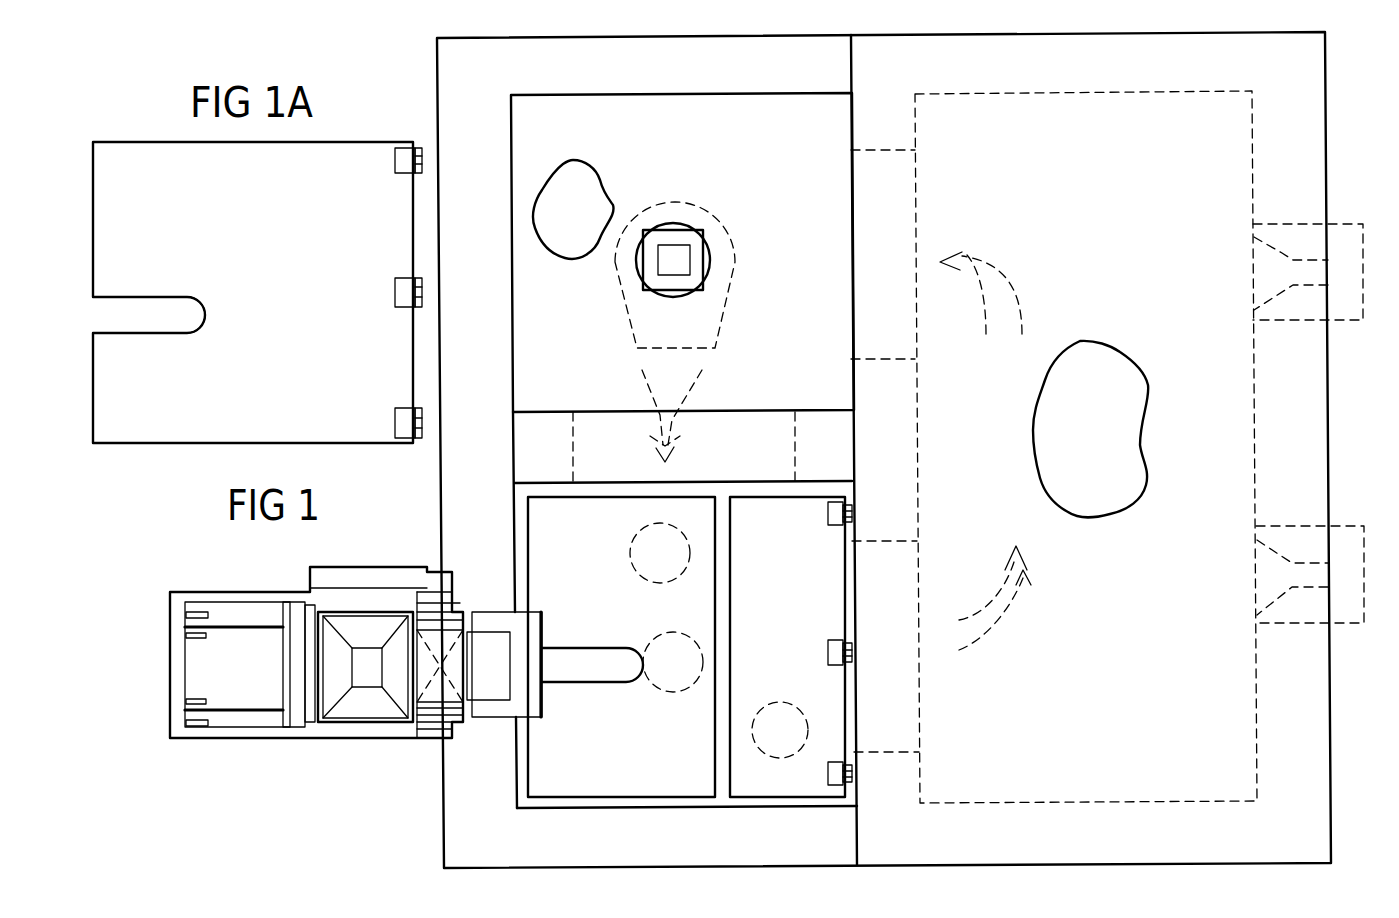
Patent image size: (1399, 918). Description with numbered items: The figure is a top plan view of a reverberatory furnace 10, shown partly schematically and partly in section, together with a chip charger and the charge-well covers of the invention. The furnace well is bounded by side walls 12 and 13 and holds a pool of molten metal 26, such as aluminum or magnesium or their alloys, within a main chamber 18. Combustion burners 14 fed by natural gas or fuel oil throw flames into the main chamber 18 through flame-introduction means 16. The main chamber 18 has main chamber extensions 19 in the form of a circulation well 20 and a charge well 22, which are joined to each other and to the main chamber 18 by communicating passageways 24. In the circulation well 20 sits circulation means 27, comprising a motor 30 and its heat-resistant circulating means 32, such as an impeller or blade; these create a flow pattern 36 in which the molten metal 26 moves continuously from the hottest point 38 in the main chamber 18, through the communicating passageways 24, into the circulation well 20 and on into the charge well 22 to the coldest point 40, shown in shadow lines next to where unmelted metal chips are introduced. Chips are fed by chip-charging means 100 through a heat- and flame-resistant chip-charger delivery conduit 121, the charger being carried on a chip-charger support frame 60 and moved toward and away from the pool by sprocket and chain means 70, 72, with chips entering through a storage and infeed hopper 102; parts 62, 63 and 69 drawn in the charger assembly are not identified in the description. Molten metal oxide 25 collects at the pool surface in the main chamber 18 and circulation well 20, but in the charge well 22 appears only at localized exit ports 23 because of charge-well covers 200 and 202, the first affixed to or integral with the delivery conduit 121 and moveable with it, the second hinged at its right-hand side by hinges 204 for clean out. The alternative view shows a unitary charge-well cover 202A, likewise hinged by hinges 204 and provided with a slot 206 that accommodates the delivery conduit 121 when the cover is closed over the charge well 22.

In FIG. 1, the reverberatory furnace 10 is at (428, 62).
In FIG. 1, the side wall 12 is at (625, 83).
In FIG. 1, the side wall 13 is at (895, 455).
In FIG. 1, the combustion burners 14 is at (1362, 264).
In FIG. 1, the flame-introduction means 16 is at (1280, 255).
In FIG. 1, the main chamber 18 is at (1175, 711).
In FIG. 1, the main chamber extensions 19 is at (544, 133).
In FIG. 1, the circulation well 20 is at (638, 143).
In FIG. 1, the charge well 22 is at (526, 818).
In FIG. 1, the exit ports 23 is at (662, 492).
In FIG. 1, the communicating passageways 24 is at (585, 455).
In FIG. 1, the molten metal oxide 25 is at (779, 160).
In FIG. 1, the molten metal 26 is at (1108, 417).
In FIG. 1, the circulation means 27 is at (733, 277).
In FIG. 1, the motor 30 is at (673, 260).
In FIG. 1, the circulating means 32 is at (672, 223).
In FIG. 1, the flow pattern 36 is at (655, 393).
In FIG. 1, the hottest point 38 is at (1086, 463).
In FIG. 1, the coldest point 40 is at (672, 664).
In FIG. 1, the chip-charger support frame 60 is at (160, 693).
In FIG. 1, the switch housing 62 is at (170, 658).
In FIG. 1, the switch chamber 63 is at (248, 682).
In FIG. 1, the terminal members 69 is at (186, 616).
In FIG. 1, the sprocket and chain means 70 is at (188, 627).
In FIG. 1, the sprocket and chain means 72 is at (218, 612).
In FIG. 1, the chip-charging means 100 is at (345, 556).
In FIG. 1, the metal chip storage and infeed hopper 102 is at (362, 706).
In FIG. 1, the chip-charger delivery conduit 121 is at (590, 678).
In FIG. 1, the charge-well cover 200 is at (585, 532).
In FIG. 1, the charge-well cover 202 is at (808, 592).
In FIG. 1A, the charge-well cover 202A is at (243, 227).
In FIG. 1A, the hinges 204 is at (385, 292).
In FIG. 1, the hinges 204 is at (827, 522).
In FIG. 1A, the slot 206 is at (214, 319).